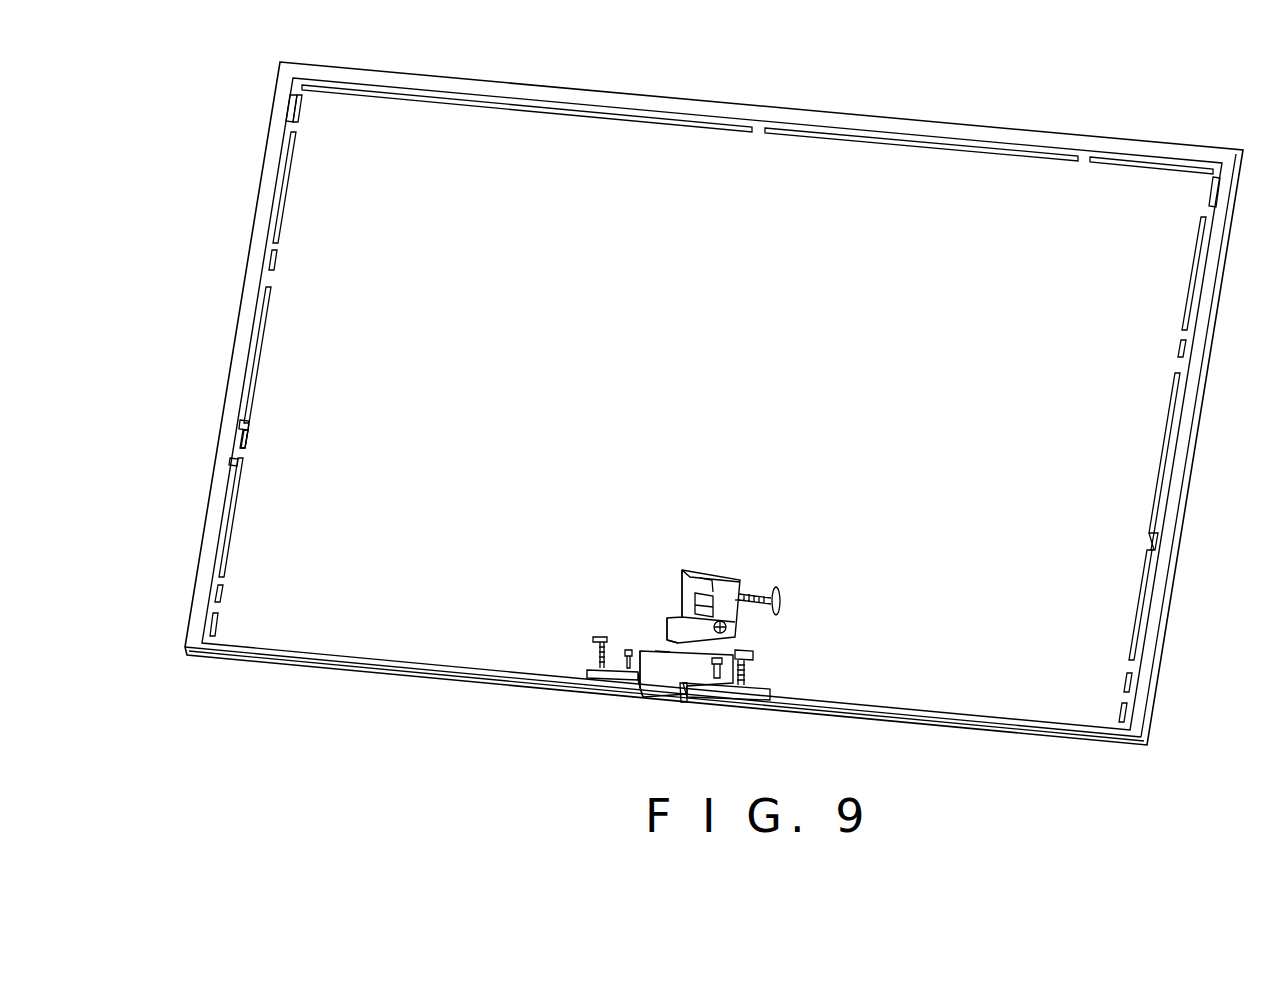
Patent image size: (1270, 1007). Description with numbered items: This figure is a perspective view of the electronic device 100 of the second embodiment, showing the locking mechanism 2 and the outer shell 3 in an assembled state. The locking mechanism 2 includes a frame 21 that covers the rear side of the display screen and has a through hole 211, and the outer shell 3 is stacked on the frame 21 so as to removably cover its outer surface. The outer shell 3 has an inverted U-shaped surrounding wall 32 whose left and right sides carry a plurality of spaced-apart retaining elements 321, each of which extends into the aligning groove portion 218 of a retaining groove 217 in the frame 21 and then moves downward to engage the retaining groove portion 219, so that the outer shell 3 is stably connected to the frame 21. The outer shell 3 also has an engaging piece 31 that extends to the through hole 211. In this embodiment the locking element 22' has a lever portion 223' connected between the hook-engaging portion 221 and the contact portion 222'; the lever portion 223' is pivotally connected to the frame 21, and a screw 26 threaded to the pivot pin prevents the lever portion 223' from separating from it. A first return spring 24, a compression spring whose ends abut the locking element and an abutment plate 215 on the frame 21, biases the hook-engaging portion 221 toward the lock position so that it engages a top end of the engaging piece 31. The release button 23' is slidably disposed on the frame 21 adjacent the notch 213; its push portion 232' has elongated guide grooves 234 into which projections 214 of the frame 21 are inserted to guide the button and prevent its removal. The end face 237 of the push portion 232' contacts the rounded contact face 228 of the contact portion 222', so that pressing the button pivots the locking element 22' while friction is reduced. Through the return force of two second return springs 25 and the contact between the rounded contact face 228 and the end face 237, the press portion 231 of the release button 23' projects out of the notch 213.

The electronic device 100 is at (945, 92).
The locking mechanism 2 is at (640, 709).
The outer shell 3 is at (750, 94).
The frame 21 is at (416, 688).
The surrounding wall 32 is at (810, 112).
The retaining element 321 is at (243, 460).
The retaining groove 217 is at (250, 450).
The aligning groove portion 218 is at (248, 426).
The retaining groove portion 219 is at (233, 462).
The locking element 22' is at (735, 548).
The through hole 211 is at (688, 567).
The hook-engaging portion 221 is at (710, 588).
The engaging piece 31 is at (700, 570).
The lever portion 223' is at (654, 586).
The contact portion 222' is at (646, 607).
The first return spring 24 is at (758, 592).
The abutment plate 215 is at (785, 601).
The screw 26 is at (728, 627).
The release button 23' is at (660, 715).
The notch 213 is at (691, 696).
The press portion 231 is at (657, 705).
The projection 214 is at (633, 696).
The end face 237 is at (648, 690).
The rounded contact face 228 is at (664, 646).
The push portion 232' is at (575, 644).
The guide groove 234 is at (598, 655).
The second return spring 25 is at (748, 683).